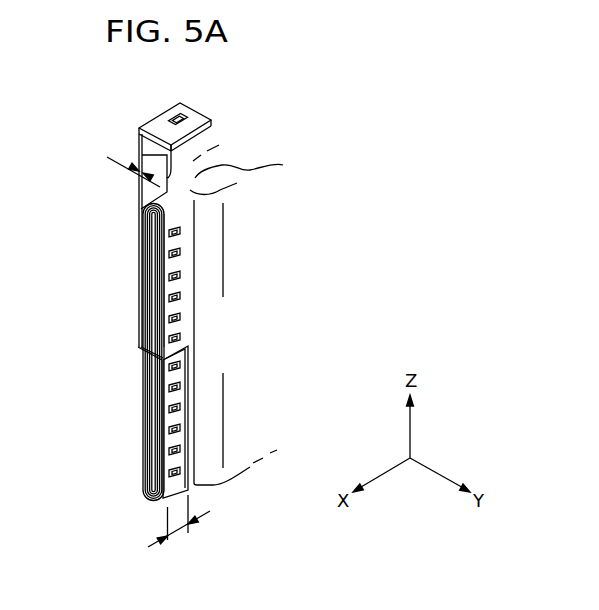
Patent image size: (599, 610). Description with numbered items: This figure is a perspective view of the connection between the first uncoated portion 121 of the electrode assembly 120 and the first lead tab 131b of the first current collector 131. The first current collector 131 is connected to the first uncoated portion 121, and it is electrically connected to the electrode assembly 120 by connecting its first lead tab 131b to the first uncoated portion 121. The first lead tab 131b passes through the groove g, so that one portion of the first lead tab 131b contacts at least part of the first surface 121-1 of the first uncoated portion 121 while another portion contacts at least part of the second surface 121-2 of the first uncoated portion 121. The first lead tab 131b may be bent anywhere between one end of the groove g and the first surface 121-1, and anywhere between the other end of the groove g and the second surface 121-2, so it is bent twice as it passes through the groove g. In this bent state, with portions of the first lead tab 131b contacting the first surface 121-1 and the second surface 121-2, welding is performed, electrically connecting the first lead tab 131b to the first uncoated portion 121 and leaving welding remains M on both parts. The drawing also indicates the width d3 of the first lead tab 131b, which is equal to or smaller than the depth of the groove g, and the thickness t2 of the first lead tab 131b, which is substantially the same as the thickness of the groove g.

The first current collector 131 is at (152, 117).
The first lead tab 131b is at (140, 192).
The thickness of the first lead tab t2 is at (133, 164).
The groove g is at (147, 354).
The first uncoated portion 121 is at (150, 462).
The first surface of the first uncoated portion 121-1 is at (140, 436).
The second surface of the first uncoated portion 121-2 is at (172, 313).
The welding remains M is at (182, 232).
The electrode assembly 120 is at (254, 315).
The width of the first lead tab d3 is at (179, 527).